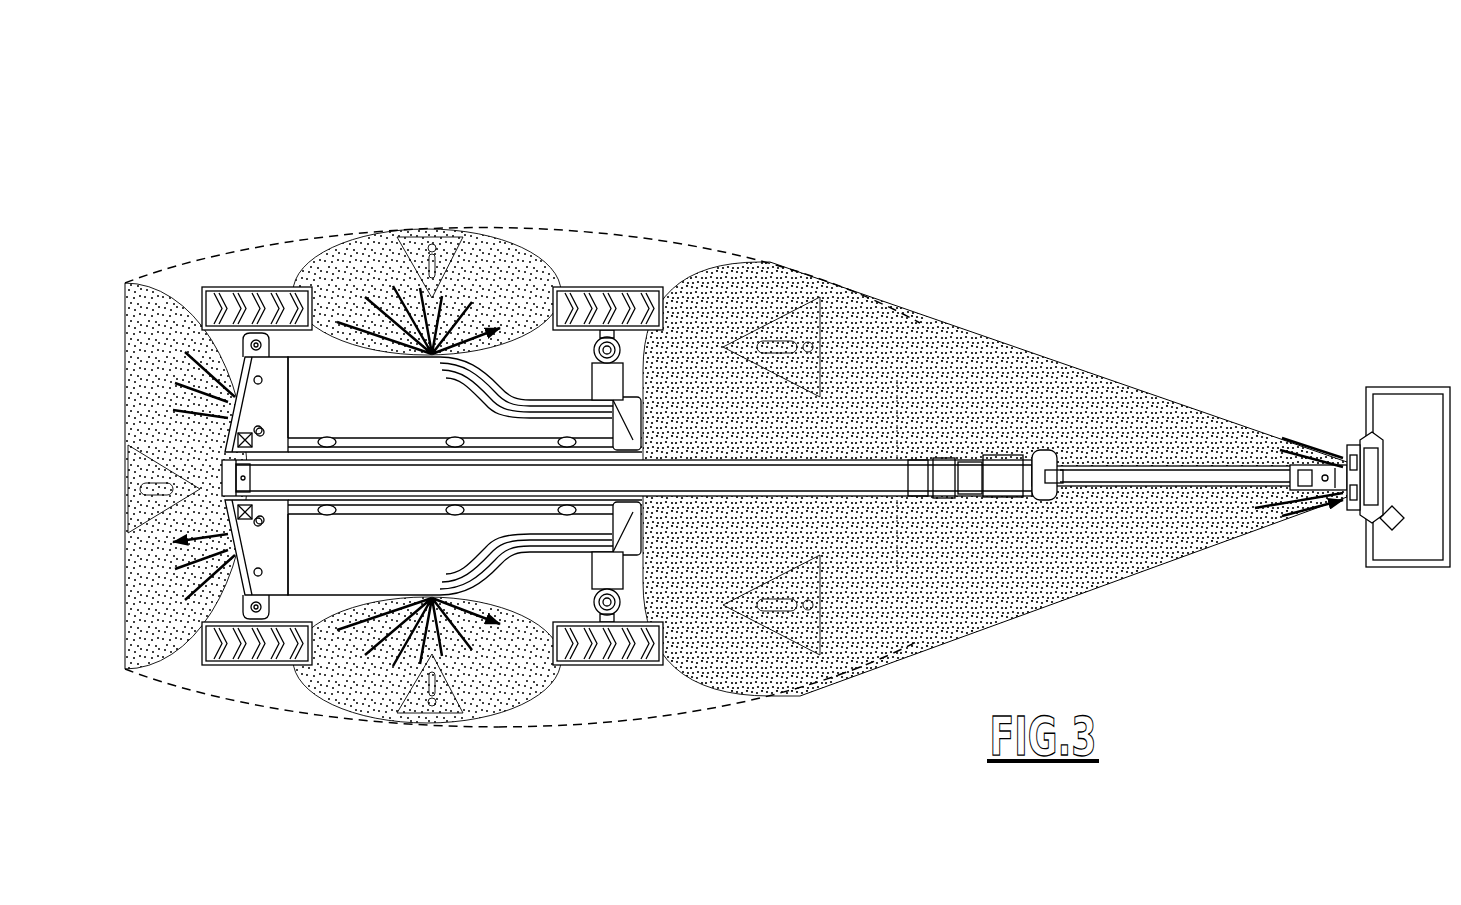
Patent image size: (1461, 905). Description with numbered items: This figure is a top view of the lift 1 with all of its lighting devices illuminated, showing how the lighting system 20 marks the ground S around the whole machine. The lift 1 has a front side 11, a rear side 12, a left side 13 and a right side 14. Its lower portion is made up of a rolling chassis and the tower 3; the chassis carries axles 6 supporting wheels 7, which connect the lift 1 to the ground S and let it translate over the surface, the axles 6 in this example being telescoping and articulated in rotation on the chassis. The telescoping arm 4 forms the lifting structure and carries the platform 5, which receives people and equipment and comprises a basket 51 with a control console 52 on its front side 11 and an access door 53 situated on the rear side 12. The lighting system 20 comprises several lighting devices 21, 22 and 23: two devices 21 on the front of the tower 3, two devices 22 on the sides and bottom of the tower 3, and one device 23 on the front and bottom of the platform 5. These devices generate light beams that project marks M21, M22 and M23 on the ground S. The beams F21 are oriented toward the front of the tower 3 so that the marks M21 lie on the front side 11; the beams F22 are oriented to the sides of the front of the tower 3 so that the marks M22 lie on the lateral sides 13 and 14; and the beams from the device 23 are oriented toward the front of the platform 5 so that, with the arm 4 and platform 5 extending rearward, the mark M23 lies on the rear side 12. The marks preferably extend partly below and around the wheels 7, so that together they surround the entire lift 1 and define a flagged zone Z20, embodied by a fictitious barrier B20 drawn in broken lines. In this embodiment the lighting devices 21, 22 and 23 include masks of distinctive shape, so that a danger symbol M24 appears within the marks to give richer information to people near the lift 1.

The lift 1 is at (776, 354).
The front side 11 is at (152, 243).
The right side 14 is at (431, 213).
The fictitious barrier B20 is at (566, 228).
The tower 3 is at (565, 408).
The axles 6 is at (635, 293).
The wheels 7 is at (612, 383).
The danger symbol M24 is at (783, 313).
The marks M22 is at (427, 476).
The light beams F22 is at (429, 477).
The light beams F21 is at (190, 479).
The marks M21 is at (186, 476).
The lighting devices 21 is at (227, 413).
The lighting devices 22 is at (425, 360).
The telescoping arm 4 is at (478, 472).
The mark M23 is at (995, 479).
The rear side 12 is at (1077, 342).
The platform 5 is at (1354, 446).
The basket 51 is at (1400, 388).
The control console 52 is at (1347, 458).
The access door 53 is at (1447, 488).
The lighting device 23 is at (1350, 527).
The lighting system 20 is at (283, 728).
The left side 13 is at (397, 752).
The flagged zone Z20 is at (638, 683).
The ground S is at (825, 712).